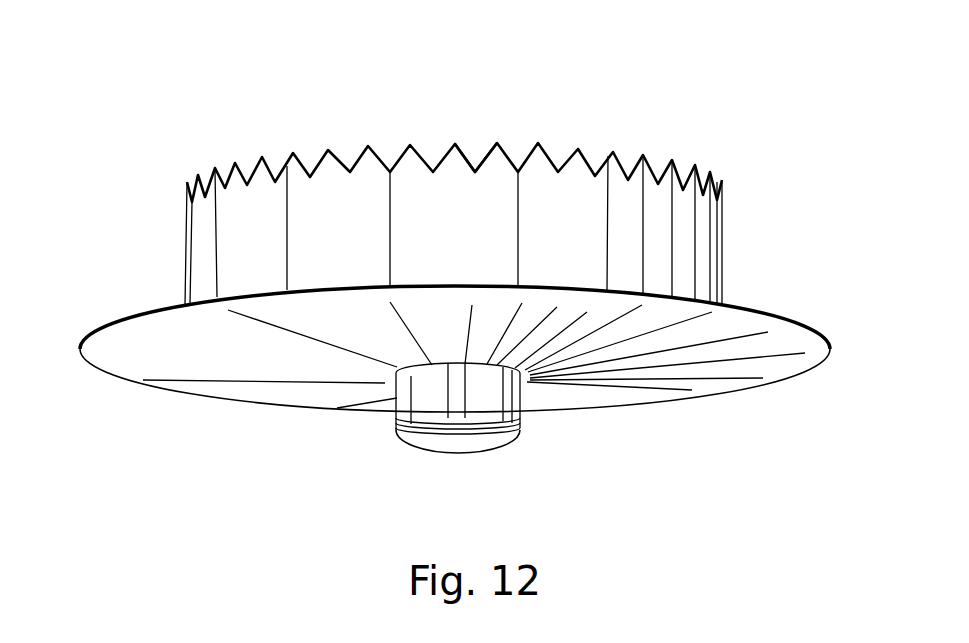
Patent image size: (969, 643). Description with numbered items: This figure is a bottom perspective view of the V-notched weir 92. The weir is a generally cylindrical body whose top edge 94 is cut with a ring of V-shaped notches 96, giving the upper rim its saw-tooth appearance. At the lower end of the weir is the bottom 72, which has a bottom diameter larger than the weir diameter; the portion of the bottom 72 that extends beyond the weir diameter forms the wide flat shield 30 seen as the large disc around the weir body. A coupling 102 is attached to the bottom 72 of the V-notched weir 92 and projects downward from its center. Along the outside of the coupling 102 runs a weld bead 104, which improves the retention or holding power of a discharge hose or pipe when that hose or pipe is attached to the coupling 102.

The shield 30 is at (147, 313).
The V-notched weir 92 is at (420, 165).
The top edge 94 is at (535, 146).
The V-shaped notches 96 is at (476, 170).
The bottom 72 is at (536, 442).
The coupling 102 is at (534, 421).
The weld bead 104 is at (422, 430).